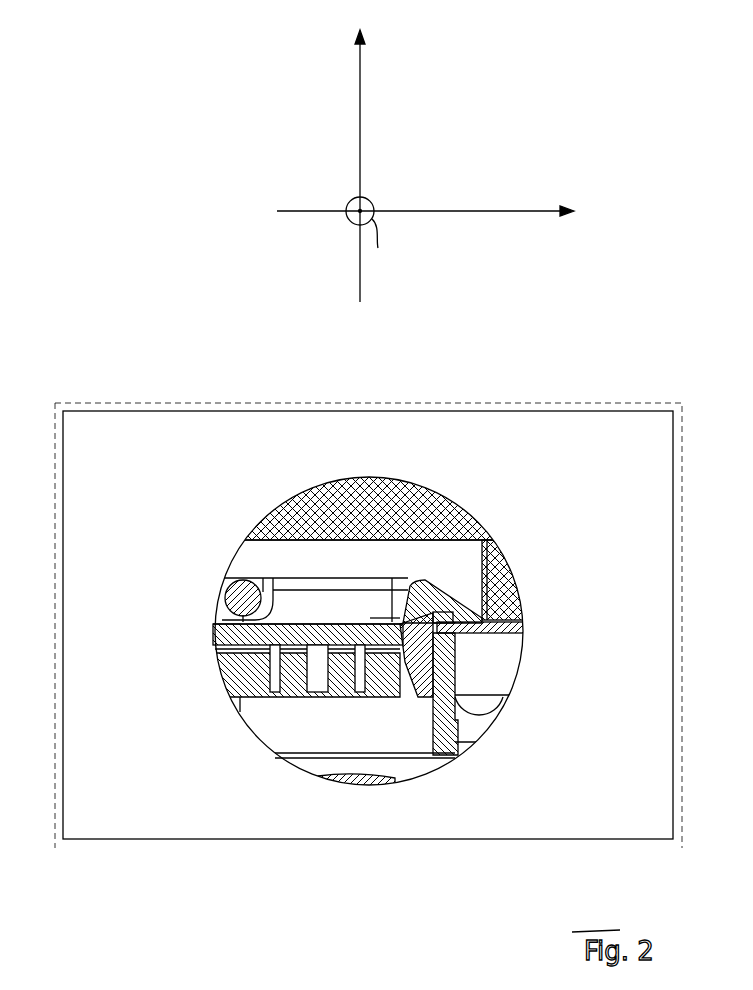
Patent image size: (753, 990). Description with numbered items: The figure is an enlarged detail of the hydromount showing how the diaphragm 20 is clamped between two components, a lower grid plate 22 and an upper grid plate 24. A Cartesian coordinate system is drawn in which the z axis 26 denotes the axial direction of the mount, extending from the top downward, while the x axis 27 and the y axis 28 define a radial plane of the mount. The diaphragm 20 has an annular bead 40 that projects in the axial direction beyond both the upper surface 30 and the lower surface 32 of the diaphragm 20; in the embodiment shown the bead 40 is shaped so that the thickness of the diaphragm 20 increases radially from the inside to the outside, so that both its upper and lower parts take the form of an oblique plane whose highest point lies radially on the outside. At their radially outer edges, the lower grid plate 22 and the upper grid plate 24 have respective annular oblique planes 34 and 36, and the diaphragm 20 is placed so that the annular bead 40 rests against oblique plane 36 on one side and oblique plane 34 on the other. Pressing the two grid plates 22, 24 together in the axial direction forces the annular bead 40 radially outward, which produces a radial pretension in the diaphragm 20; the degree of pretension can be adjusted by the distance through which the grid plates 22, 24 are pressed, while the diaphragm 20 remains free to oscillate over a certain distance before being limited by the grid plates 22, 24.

The diaphragm 20 is at (222, 633).
The lower grid plate 22 is at (387, 686).
The upper grid plate 24 is at (412, 616).
The z axis 26 is at (360, 125).
The x axis 27 is at (488, 211).
The y axis 28 is at (368, 198).
The upper surface 30 is at (310, 626).
The lower surface 32 is at (310, 649).
The oblique plane 34 is at (413, 657).
The oblique plane 36 is at (440, 595).
The annular bead 40 is at (437, 624).